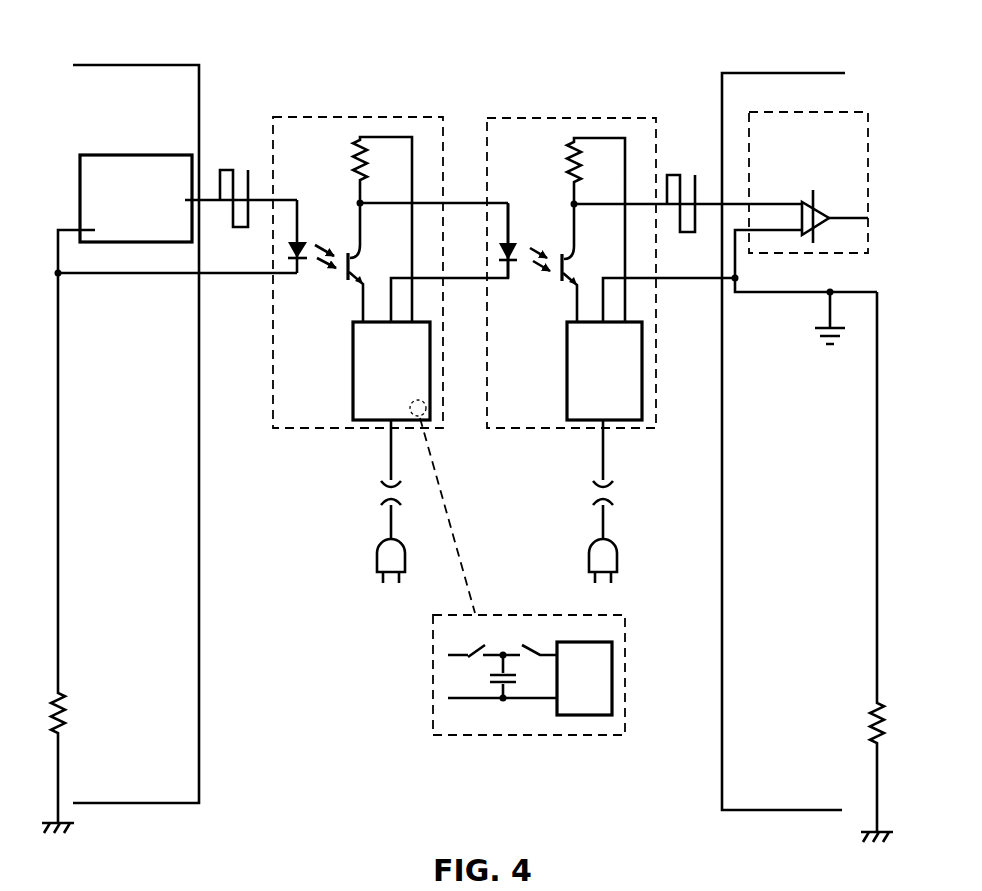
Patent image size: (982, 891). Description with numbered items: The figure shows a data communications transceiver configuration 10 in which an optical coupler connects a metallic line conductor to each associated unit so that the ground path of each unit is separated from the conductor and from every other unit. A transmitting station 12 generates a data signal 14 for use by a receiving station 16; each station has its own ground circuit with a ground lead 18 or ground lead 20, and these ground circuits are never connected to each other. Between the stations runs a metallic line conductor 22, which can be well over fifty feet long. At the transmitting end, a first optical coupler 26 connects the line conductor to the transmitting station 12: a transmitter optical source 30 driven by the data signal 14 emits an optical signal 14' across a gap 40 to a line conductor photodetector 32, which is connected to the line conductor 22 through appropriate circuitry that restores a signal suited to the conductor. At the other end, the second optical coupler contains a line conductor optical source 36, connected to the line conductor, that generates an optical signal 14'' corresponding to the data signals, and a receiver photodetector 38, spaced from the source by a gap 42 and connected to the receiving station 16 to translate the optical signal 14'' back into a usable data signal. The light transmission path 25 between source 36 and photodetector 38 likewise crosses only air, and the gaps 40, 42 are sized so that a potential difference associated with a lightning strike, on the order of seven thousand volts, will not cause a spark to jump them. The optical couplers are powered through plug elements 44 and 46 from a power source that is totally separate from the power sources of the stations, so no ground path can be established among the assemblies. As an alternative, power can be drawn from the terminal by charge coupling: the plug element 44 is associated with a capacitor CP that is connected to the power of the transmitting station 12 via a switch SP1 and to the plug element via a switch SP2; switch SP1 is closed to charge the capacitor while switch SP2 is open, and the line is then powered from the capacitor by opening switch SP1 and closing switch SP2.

The data communications transceiver configuration 10 is at (547, 79).
The transmitting station 12 is at (184, 98).
The data signal 14 is at (465, 169).
The optical signal 14' is at (285, 308).
The optical signal 14'' is at (500, 320).
The receiving station 16 is at (736, 89).
The ground lead 18 is at (58, 560).
The ground lead 20 is at (877, 610).
The metallic line conductor 22 is at (465, 203).
The light path to second module 25 is at (547, 241).
The first optical coupler 26 is at (330, 304).
The transmitter optical source 30 is at (284, 262).
The line conductor photodetector 32 is at (352, 261).
The line conductor optical source 36 is at (498, 251).
The receiver photodetector 38 is at (567, 262).
The gap 40 is at (367, 251).
The gap 42 is at (627, 257).
The plug element 44 is at (366, 542).
The plug element 46 is at (577, 539).
The switch SP1 is at (485, 646).
The switch SP2 is at (530, 647).
The capacitor CP is at (477, 688).